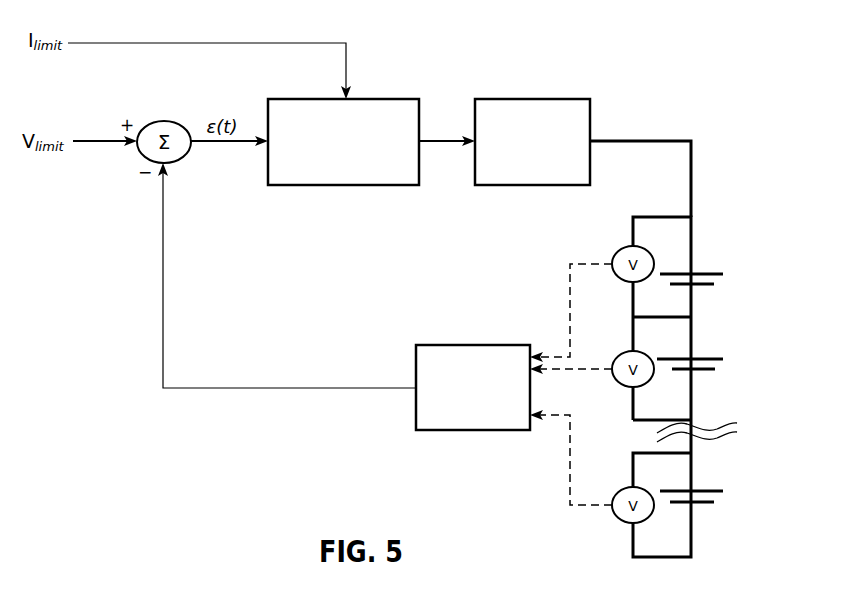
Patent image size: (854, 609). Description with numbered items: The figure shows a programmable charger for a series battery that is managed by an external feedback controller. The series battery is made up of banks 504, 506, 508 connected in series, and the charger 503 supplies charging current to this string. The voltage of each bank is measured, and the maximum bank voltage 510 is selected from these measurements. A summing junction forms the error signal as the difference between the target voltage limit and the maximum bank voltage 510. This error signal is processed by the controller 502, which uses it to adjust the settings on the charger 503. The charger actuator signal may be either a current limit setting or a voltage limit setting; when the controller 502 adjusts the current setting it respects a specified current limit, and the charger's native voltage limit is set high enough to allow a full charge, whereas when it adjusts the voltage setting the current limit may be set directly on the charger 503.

The controller 502 is at (343, 142).
The charger 503 is at (532, 142).
The bank 504 is at (719, 278).
The bank 506 is at (718, 364).
The bank 508 is at (720, 495).
The maximum bank voltage 510 is at (473, 387).